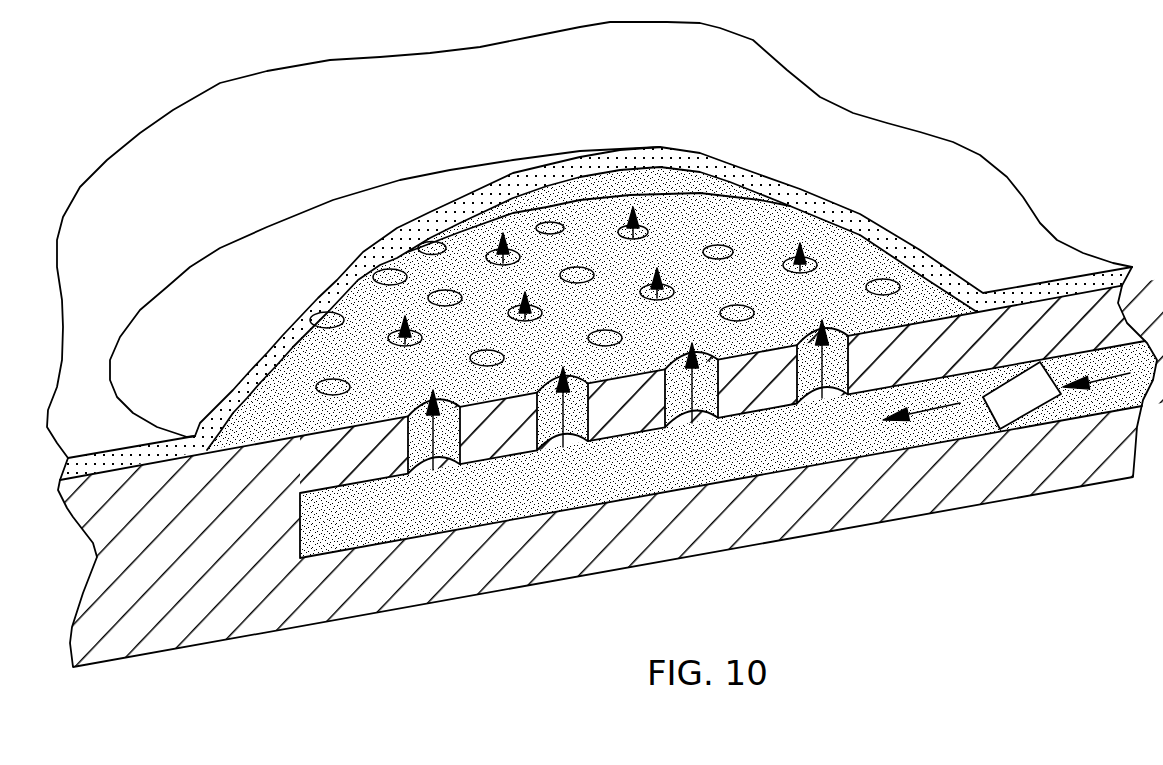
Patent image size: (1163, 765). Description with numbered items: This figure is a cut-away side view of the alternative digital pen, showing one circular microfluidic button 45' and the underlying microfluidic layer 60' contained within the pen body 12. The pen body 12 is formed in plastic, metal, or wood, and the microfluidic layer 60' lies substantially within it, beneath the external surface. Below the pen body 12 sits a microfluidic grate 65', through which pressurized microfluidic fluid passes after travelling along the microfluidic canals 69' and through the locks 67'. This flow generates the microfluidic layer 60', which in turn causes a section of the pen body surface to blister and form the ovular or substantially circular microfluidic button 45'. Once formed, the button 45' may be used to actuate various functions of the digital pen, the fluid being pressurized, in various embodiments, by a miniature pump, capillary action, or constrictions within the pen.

The pen body 12 is at (123, 203).
The microfluidic button 45' is at (596, 312).
The microfluidic layer 60' is at (592, 234).
The microfluidic grate 65' is at (628, 496).
The microfluidic lock 67' is at (728, 473).
The microfluidic canal 69' is at (1022, 459).